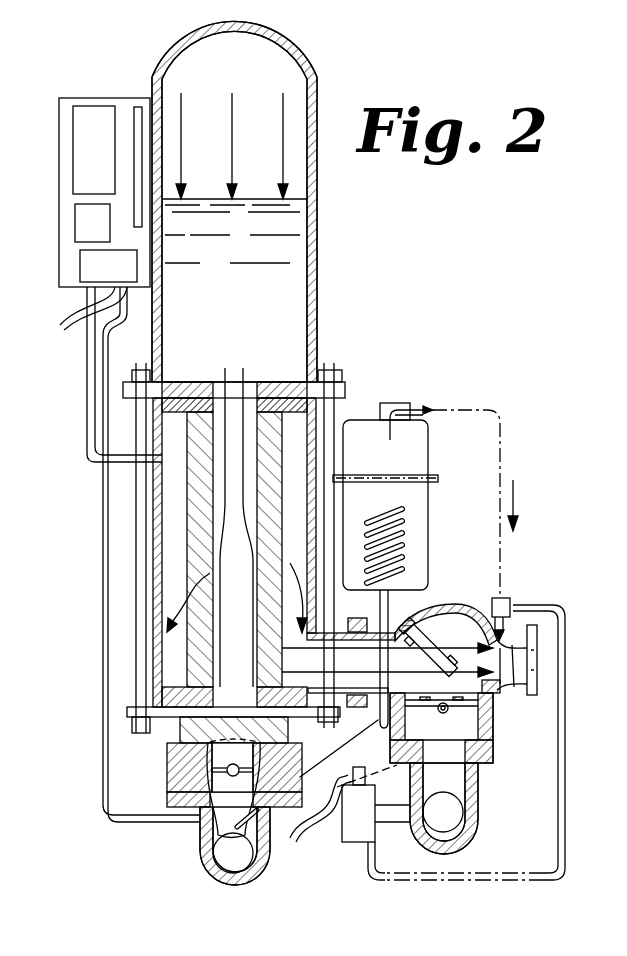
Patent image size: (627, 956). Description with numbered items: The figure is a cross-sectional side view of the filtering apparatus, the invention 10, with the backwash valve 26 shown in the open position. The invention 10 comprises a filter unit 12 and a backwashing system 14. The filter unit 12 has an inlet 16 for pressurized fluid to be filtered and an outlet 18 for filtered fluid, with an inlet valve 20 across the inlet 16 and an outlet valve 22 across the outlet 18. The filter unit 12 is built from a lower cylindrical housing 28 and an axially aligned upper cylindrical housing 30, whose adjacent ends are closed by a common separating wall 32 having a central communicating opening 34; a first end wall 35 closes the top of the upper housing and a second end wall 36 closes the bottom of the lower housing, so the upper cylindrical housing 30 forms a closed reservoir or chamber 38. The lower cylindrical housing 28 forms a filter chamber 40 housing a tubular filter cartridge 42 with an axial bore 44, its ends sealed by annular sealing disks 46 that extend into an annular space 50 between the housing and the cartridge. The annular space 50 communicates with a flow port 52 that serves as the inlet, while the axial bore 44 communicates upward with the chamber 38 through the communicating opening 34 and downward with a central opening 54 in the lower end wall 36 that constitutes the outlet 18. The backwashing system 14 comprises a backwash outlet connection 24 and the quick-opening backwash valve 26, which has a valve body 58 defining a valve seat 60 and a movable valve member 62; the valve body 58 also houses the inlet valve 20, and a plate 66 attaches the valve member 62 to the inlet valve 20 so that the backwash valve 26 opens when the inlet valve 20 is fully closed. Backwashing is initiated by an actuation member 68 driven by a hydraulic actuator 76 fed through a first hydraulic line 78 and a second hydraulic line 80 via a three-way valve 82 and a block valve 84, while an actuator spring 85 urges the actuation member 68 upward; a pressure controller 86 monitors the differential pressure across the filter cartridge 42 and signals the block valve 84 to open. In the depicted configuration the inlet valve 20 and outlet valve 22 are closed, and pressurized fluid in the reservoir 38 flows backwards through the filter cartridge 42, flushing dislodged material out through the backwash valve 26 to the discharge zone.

The invention 10 is at (440, 326).
The filter unit 12 is at (324, 283).
The backwashing system 14 is at (443, 565).
The inlet 16 is at (443, 828).
The outlet 18 is at (237, 868).
The inlet valve 20 is at (467, 742).
The outlet valve 22 is at (208, 798).
The backwash outlet connection 24 is at (540, 655).
The backwash valve 26 is at (478, 596).
The lower cylindrical housing 28 is at (320, 418).
The upper cylindrical housing 30 is at (310, 203).
The separating wall 32 is at (182, 384).
The communicating opening 34 is at (233, 388).
The first end wall 35 is at (298, 38).
The second end wall 36 is at (163, 710).
The closed reservoir or chamber 38 is at (250, 73).
The filter chamber 40 is at (296, 458).
The filter cartridge 42 is at (207, 585).
The axial bore 44 is at (223, 645).
The annular sealing disks 46 is at (158, 435).
The annular space 50 is at (175, 502).
The flow port 52 is at (318, 644).
The central opening 54 is at (227, 772).
The valve body 58 is at (497, 700).
The valve seat 60 is at (497, 687).
The valve member 62 is at (407, 650).
The plate 66 is at (440, 692).
The actuation member 68 is at (388, 602).
The hydraulic actuator 76 is at (450, 452).
The first hydraulic line 78 is at (487, 403).
The second hydraulic line 80 is at (566, 808).
The three-way valve 82 is at (510, 605).
The block valve 84 is at (347, 820).
The actuator spring 85 is at (402, 514).
The pressure controller 86 is at (48, 226).